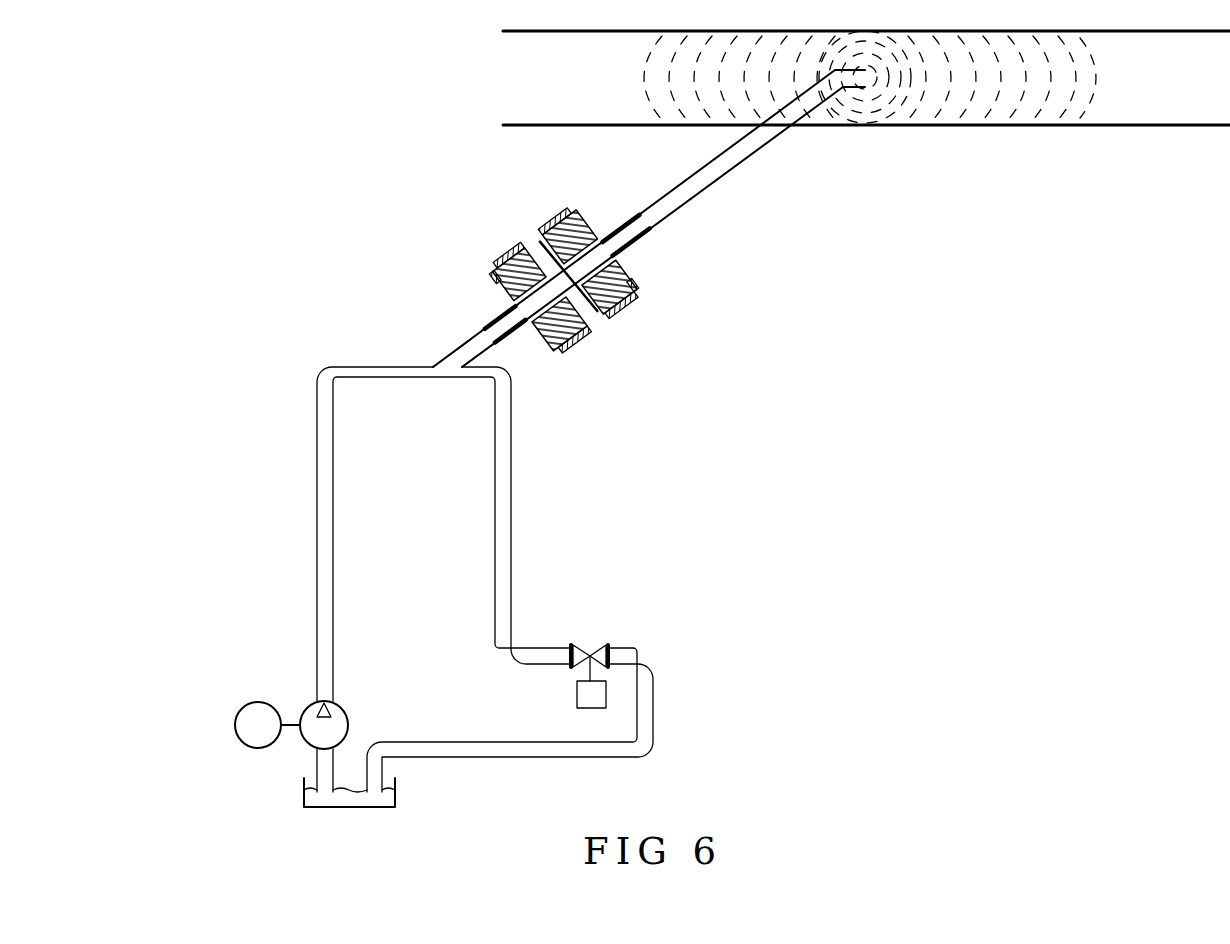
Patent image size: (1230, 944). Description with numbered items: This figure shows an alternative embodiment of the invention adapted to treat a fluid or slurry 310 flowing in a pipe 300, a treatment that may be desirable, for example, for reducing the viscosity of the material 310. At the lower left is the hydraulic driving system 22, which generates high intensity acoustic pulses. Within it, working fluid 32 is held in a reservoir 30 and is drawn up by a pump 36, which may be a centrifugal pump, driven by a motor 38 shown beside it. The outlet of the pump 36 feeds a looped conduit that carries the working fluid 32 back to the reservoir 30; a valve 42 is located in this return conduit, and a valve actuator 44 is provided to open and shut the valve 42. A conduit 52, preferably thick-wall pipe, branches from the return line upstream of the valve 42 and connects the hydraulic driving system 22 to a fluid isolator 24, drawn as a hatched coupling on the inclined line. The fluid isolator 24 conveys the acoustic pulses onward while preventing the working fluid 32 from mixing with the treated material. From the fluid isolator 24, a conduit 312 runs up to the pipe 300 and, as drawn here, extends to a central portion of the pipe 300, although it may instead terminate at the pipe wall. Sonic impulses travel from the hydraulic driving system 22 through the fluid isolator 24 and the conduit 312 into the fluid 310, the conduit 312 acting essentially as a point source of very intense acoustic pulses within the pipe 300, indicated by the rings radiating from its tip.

The hydraulic driving system 22 is at (386, 340).
The fluid isolator 24 is at (600, 330).
The reservoir 30 is at (403, 793).
The working fluid 32 is at (355, 808).
The pump 36 is at (247, 728).
The motor 38 is at (345, 722).
The valve 42 is at (592, 642).
The valve actuator 44 is at (592, 700).
The conduit 52 is at (467, 356).
The pipe 300 is at (942, 128).
The fluid or slurry 310 is at (1113, 85).
The conduit 312 is at (697, 190).